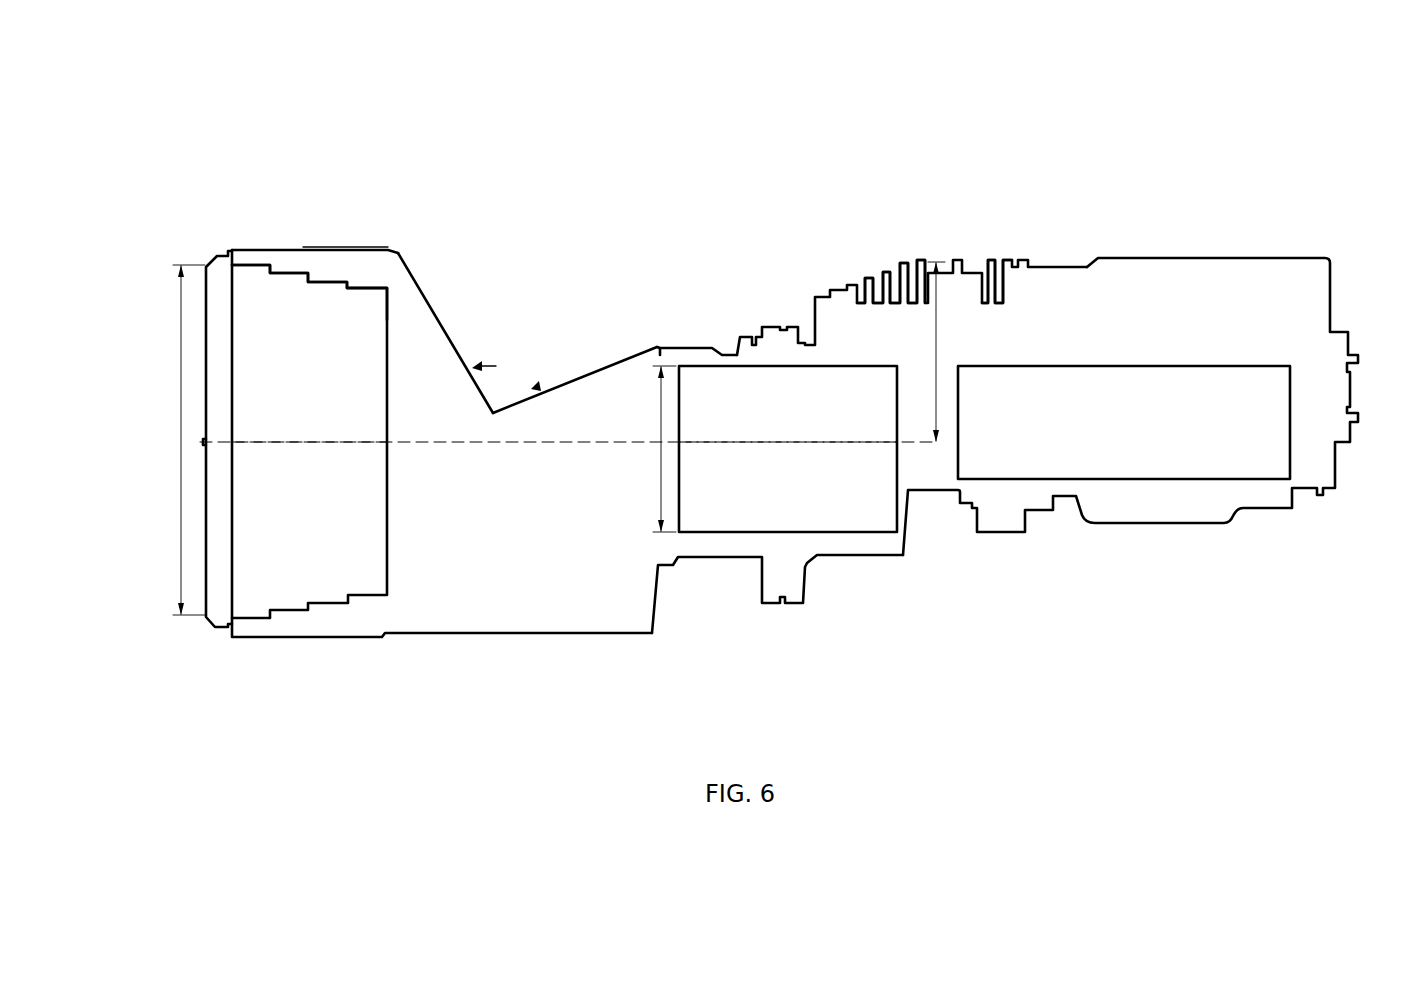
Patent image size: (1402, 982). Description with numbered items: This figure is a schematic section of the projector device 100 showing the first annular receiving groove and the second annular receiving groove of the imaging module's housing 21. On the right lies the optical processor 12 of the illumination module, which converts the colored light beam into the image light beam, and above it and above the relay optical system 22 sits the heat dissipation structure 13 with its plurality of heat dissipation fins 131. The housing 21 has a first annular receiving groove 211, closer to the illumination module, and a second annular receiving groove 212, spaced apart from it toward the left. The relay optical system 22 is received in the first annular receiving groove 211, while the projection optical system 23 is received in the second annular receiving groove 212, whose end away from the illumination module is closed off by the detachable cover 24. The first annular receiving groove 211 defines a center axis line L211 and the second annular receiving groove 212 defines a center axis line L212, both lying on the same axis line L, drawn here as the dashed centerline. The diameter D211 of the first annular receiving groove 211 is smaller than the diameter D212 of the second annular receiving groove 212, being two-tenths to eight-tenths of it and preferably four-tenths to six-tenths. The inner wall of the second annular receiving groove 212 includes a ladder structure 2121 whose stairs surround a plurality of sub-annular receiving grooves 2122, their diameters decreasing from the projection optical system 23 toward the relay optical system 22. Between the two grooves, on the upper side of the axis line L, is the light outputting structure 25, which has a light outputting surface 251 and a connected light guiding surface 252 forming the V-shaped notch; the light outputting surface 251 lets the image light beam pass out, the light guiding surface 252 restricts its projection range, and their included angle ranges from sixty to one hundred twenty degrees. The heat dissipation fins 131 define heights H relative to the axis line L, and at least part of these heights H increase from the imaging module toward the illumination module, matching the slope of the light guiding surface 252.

The projector device 100 is at (183, 96).
The optical processor 12 is at (915, 619).
The heat dissipation structure 13 is at (973, 131).
The heat dissipation fins 131 is at (992, 257).
The housing 21 is at (546, 634).
The first annular receiving groove 211 is at (717, 356).
The second annular receiving groove 212 is at (447, 131).
The ladder structure 2121 is at (387, 273).
The sub-annular receiving grooves 2122 is at (363, 282).
The relay optical system 22 is at (683, 617).
The projection optical system 23 is at (232, 654).
The cover 24 is at (217, 615).
The light outputting structure 25 is at (593, 269).
The light outputting surface 251 is at (453, 336).
The light guiding surface 252 is at (575, 375).
The axis line L is at (510, 446).
The center axis line L212 is at (287, 437).
The center axis line L211 is at (803, 440).
The diameter D212 is at (156, 440).
The diameter D211 is at (634, 449).
The heights H is at (928, 352).